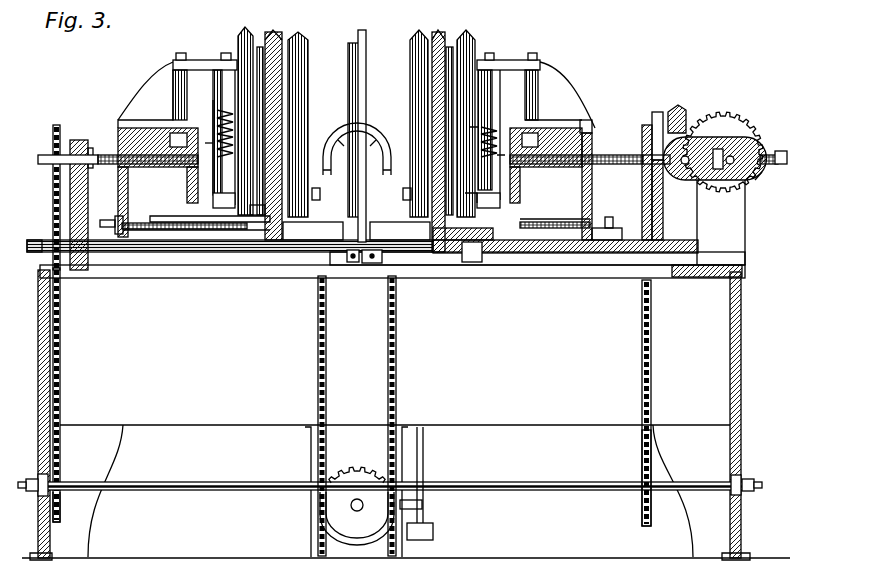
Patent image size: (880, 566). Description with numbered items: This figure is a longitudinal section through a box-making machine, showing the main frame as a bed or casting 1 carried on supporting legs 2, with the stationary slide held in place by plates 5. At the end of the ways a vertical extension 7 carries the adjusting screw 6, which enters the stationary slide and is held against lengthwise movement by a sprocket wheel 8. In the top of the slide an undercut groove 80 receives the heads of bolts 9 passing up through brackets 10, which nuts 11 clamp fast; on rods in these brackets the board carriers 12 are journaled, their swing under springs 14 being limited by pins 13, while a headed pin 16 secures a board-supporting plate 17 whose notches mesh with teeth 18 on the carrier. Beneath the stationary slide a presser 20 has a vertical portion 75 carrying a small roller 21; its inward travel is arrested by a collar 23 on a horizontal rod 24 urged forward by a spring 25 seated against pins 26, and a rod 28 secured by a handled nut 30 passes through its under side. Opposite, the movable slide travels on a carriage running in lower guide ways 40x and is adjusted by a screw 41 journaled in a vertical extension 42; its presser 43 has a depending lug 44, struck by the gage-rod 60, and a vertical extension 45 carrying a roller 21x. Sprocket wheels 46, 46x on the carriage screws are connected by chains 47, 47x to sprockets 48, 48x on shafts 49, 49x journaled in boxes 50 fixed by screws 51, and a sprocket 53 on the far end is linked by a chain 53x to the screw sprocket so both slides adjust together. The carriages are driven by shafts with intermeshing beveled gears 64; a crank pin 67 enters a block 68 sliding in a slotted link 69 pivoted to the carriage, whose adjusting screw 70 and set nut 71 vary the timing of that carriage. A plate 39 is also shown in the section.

The bed or casting 1 is at (204, 331).
The supporting legs 2 is at (388, 491).
The plates 5 is at (624, 214).
The adjusting screw 6 is at (108, 158).
The vertical extensions 7 is at (78, 140).
The sprocket wheels 8 is at (56, 125).
The bolts 9 is at (195, 60).
The brackets 10 is at (356, 95).
The nuts 11 is at (176, 56).
The board carriers 12 is at (226, 88).
The pins 13 is at (187, 92).
The springs 14 is at (233, 130).
The headed pin 16 is at (318, 193).
The plate 17 is at (257, 192).
The teeth 18 is at (412, 72).
The pressers 20 is at (222, 235).
The rollers 21 is at (250, 40).
The rollers 21x is at (350, 52).
The washers or collars 23 is at (113, 216).
The horizontal rods 24 is at (185, 216).
The springs 25 is at (145, 222).
The pins 26 is at (175, 223).
The rods 28 is at (372, 265).
The nuts 30 is at (226, 53).
The plate 39 is at (537, 259).
The guide ways 40x is at (392, 272).
The screw 41 is at (597, 157).
The vertical extensions 42 is at (398, 140).
The pressers 43 is at (495, 238).
The depending lugs 44 is at (470, 262).
The vertical extensions 45 is at (360, 36).
The sprocket wheel 46 is at (647, 125).
The sprocket wheel 46x is at (360, 139).
The chain 47 is at (651, 292).
The chain 47x is at (357, 416).
The sprocket 48 is at (646, 468).
The sprocket 48x is at (357, 518).
The shaft 49 is at (540, 475).
The shaft 49x is at (363, 505).
The boxes 50 is at (40, 478).
The screws 51 is at (26, 490).
The sprocket wheel 53 is at (56, 500).
The chain 53x is at (60, 345).
The gage-rods 60 is at (38, 250).
The beveled gears 64 is at (681, 106).
The crank pin 67 is at (765, 168).
The block 68 is at (756, 182).
The slotted link or pitman 69 is at (723, 182).
The adjusting screw 70 is at (787, 156).
The set nut 71 is at (763, 152).
The vertical portions 75 is at (280, 36).
The undercut grooves 80 is at (585, 127).